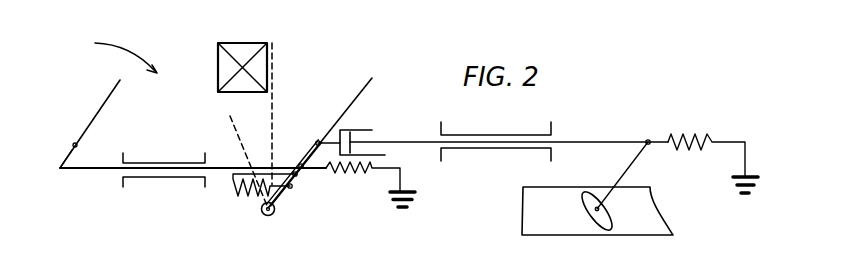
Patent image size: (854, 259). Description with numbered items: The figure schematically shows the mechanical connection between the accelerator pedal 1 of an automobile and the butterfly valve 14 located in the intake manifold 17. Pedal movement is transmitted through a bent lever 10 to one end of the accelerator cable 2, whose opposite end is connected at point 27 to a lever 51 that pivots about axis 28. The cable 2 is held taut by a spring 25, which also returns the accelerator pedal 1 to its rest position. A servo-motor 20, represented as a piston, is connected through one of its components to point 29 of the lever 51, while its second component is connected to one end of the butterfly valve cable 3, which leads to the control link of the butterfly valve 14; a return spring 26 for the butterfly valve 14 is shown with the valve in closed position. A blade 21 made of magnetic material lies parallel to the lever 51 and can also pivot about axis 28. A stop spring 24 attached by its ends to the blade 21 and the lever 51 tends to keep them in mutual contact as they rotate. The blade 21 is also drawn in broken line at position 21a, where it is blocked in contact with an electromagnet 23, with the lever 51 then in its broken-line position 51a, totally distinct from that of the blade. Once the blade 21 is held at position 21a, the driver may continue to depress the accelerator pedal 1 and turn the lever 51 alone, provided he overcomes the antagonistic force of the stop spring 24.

The accelerator pedal 1 is at (95, 113).
The bent lever 10 is at (65, 157).
The accelerator cable 2 is at (106, 170).
The broken-line position of lever 51a is at (230, 116).
The electromagnet 23 is at (242, 53).
The broken-line position of blade 21a is at (272, 43).
The blade 21 is at (373, 79).
The point of lever 29 is at (319, 140).
The lever 51 is at (312, 158).
The connection point 27 is at (301, 164).
The servo-motor 20 is at (367, 135).
The stop spring 24 is at (250, 194).
The axis 28 is at (276, 211).
The spring 25 is at (355, 178).
The butterfly valve cable 3 is at (577, 140).
The return spring 26 is at (688, 130).
The intake manifold 17 is at (533, 212).
The butterfly valve 14 is at (607, 218).